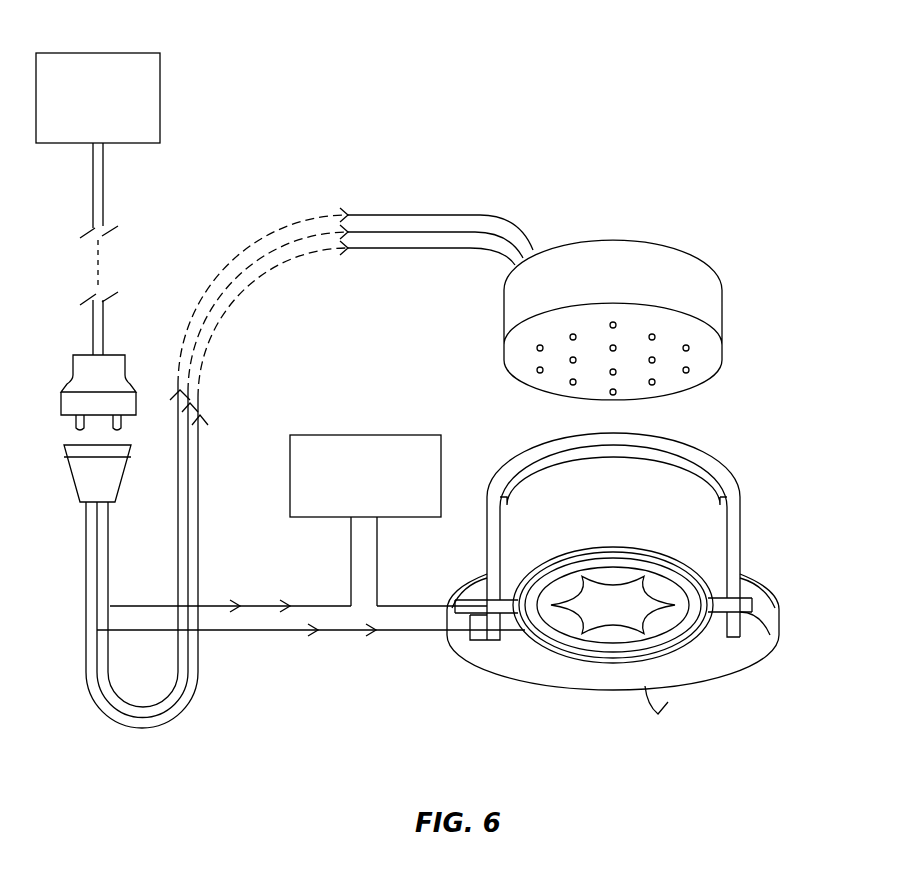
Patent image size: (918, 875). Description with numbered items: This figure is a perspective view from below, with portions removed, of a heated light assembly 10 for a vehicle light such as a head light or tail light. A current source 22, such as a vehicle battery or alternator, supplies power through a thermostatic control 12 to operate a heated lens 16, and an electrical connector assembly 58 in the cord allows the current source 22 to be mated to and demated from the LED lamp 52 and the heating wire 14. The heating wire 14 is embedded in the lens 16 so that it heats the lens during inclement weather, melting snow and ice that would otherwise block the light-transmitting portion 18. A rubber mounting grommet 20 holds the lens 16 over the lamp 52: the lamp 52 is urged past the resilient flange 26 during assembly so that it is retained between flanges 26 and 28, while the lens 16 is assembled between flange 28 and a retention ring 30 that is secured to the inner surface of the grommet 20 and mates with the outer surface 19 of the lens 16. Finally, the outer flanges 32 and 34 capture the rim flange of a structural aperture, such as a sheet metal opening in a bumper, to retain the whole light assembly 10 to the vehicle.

The heated light assembly 10 is at (310, 684).
The thermostatic control 12 is at (418, 435).
The heating wire 14 is at (560, 570).
The heated lens 16 is at (540, 660).
The light-transmitting portion 18 is at (628, 610).
The outer surface 19 is at (660, 712).
The mounting grommet 20 is at (740, 464).
The current source 22 is at (142, 53).
The flange 26 is at (553, 457).
The flange 28 is at (612, 565).
The retention ring 30 is at (495, 650).
The flange 32 is at (752, 588).
The flange 34 is at (770, 624).
The LED lamp 52 is at (718, 312).
The electrical connector assembly 58 is at (132, 450).